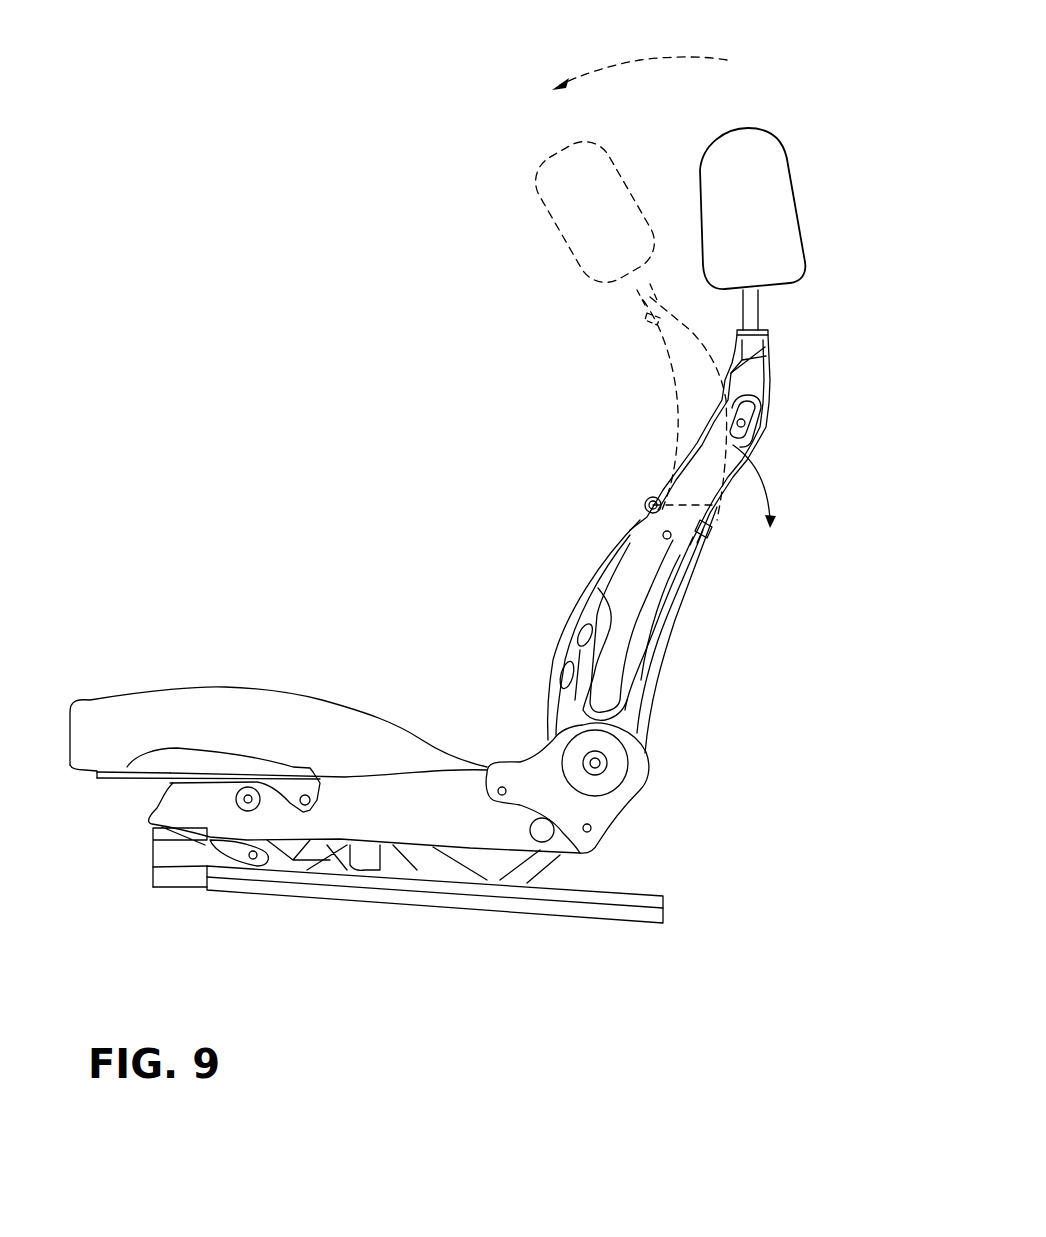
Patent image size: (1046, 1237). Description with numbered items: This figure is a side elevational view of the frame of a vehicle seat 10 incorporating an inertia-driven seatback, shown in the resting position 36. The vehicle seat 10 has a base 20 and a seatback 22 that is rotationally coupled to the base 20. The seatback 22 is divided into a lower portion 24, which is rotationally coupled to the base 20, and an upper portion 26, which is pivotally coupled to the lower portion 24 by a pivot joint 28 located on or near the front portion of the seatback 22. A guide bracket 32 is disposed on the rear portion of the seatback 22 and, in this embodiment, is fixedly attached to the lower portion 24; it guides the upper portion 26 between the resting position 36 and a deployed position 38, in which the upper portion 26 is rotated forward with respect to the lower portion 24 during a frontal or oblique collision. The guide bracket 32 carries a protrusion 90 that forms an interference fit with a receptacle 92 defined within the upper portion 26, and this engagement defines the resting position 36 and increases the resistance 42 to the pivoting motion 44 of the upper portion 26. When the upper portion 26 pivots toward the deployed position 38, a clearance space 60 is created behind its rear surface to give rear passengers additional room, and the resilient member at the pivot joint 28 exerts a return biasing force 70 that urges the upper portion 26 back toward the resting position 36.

The vehicle seat 10 is at (346, 395).
The base 20 is at (346, 772).
The seatback 22 is at (695, 691).
The lower portion 24 is at (627, 690).
The upper portion 26 is at (745, 388).
The pivot joint 28 is at (644, 505).
The guide bracket 32 is at (693, 557).
The resting position 36 is at (781, 459).
The deployed position 38 is at (614, 358).
The resistance 42 is at (768, 483).
The pivoting motion 44 is at (648, 55).
The clearance space 60 is at (752, 343).
The return biasing force 70 is at (631, 424).
The protrusion 90 is at (685, 515).
The receptacle 92 is at (648, 512).